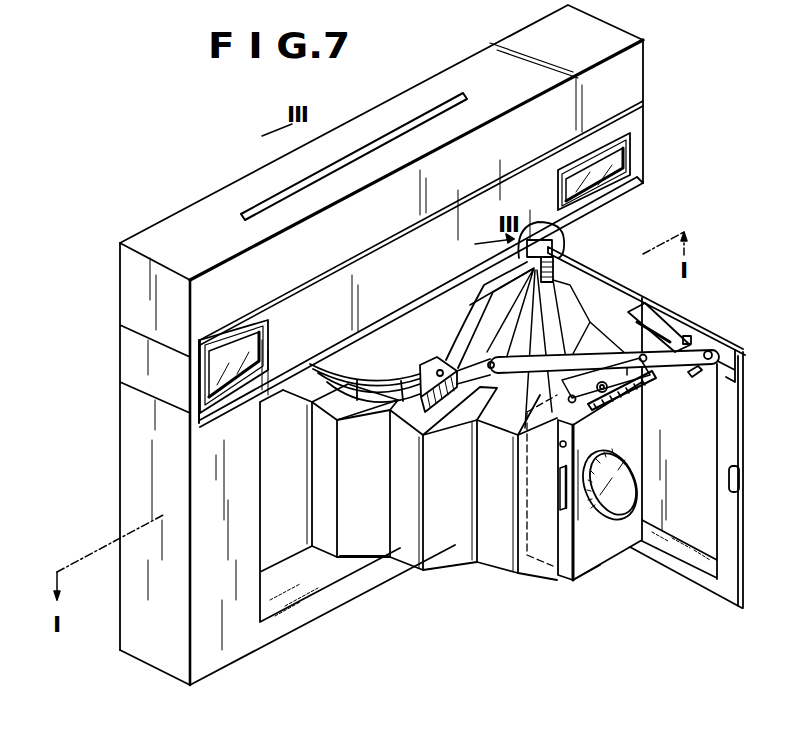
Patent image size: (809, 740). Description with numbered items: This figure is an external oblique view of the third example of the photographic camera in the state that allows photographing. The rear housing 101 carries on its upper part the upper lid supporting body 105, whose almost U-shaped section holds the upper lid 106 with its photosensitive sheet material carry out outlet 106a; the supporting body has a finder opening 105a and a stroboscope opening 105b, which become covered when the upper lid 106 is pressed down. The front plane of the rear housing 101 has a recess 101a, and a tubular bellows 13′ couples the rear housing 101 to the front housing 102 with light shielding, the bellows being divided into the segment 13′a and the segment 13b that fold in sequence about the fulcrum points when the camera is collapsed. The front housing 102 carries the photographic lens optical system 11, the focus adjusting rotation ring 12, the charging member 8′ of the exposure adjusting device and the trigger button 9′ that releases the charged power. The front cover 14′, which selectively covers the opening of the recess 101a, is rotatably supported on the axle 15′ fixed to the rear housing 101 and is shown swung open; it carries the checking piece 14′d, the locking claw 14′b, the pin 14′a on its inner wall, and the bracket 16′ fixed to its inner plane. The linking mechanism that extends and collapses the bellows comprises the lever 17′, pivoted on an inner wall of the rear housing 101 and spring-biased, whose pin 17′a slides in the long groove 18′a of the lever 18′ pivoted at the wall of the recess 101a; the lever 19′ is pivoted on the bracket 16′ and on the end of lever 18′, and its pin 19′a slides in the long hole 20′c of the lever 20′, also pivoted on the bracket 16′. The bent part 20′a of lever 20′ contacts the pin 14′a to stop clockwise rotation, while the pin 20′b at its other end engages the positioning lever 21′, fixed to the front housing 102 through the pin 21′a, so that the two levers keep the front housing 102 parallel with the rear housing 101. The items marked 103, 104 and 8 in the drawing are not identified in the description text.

The rear housing 101 is at (287, 562).
The recess 101a is at (317, 583).
The front housing 102 is at (600, 481).
The window glass 103 is at (616, 162).
The window glass 104 is at (233, 384).
The upper lid supporting body 105 is at (408, 262).
The finder opening 105a is at (632, 143).
The stroboscope opening 105b is at (240, 340).
The upper lid 106 is at (133, 292).
The photosensitive sheet material carry out outlet 106a is at (262, 207).
The photographic lens optical system 11 is at (622, 487).
The focus adjusting rotation ring 12 is at (596, 519).
The tubular bellows 13′ is at (420, 482).
The bellows segment 13′a is at (572, 318).
The bellows segment 13b is at (372, 548).
The front cover 14′ is at (686, 453).
The pin 14′a is at (720, 377).
The opening and closing locking claw 14′b is at (740, 479).
The checking piece 14′d is at (540, 238).
The axle 15′ is at (561, 244).
The bracket 16′ is at (736, 358).
The lever 17′ is at (487, 336).
The pin 17′a is at (456, 388).
The lever 18′ is at (425, 412).
The long groove 18′a is at (350, 398).
The lever 19′ is at (711, 351).
The pin 19′a is at (647, 353).
The lever 20′ is at (636, 374).
The bent part 20′a is at (694, 378).
The pin 20′b is at (606, 393).
The long hole 20′c is at (692, 337).
The positioning lever 21′ is at (652, 375).
The pin 21′a is at (574, 404).
The section indicator 8 is at (529, 420).
The charging member 8′ is at (563, 487).
The trigger button 9′ is at (561, 445).